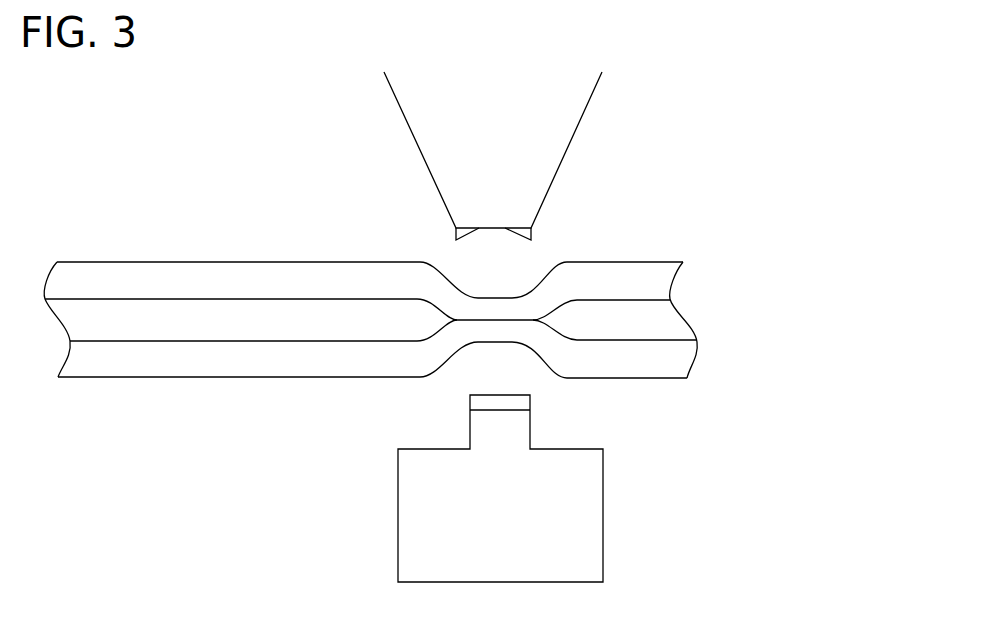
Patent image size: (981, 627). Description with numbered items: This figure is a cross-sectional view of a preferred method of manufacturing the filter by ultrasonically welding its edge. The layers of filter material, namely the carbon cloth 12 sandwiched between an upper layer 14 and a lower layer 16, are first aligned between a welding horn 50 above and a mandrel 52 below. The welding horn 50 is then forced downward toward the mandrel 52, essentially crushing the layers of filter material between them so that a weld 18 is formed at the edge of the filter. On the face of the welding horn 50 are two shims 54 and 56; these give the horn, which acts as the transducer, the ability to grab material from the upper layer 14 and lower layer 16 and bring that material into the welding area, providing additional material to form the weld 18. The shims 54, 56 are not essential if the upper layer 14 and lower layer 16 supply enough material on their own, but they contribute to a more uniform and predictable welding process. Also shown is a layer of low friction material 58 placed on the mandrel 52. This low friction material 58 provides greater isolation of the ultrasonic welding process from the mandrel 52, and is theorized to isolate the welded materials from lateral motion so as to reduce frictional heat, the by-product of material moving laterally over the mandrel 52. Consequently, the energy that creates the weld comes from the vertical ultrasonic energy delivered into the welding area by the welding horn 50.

The carbon cloth 12 is at (200, 318).
The upper layer 14 is at (267, 282).
The lower layer 16 is at (247, 360).
The weld 18 is at (497, 295).
The welding horn 50 is at (539, 134).
The mandrel 52 is at (517, 433).
The shim 54 is at (457, 232).
The shim 56 is at (531, 237).
The low friction material 58 is at (483, 403).